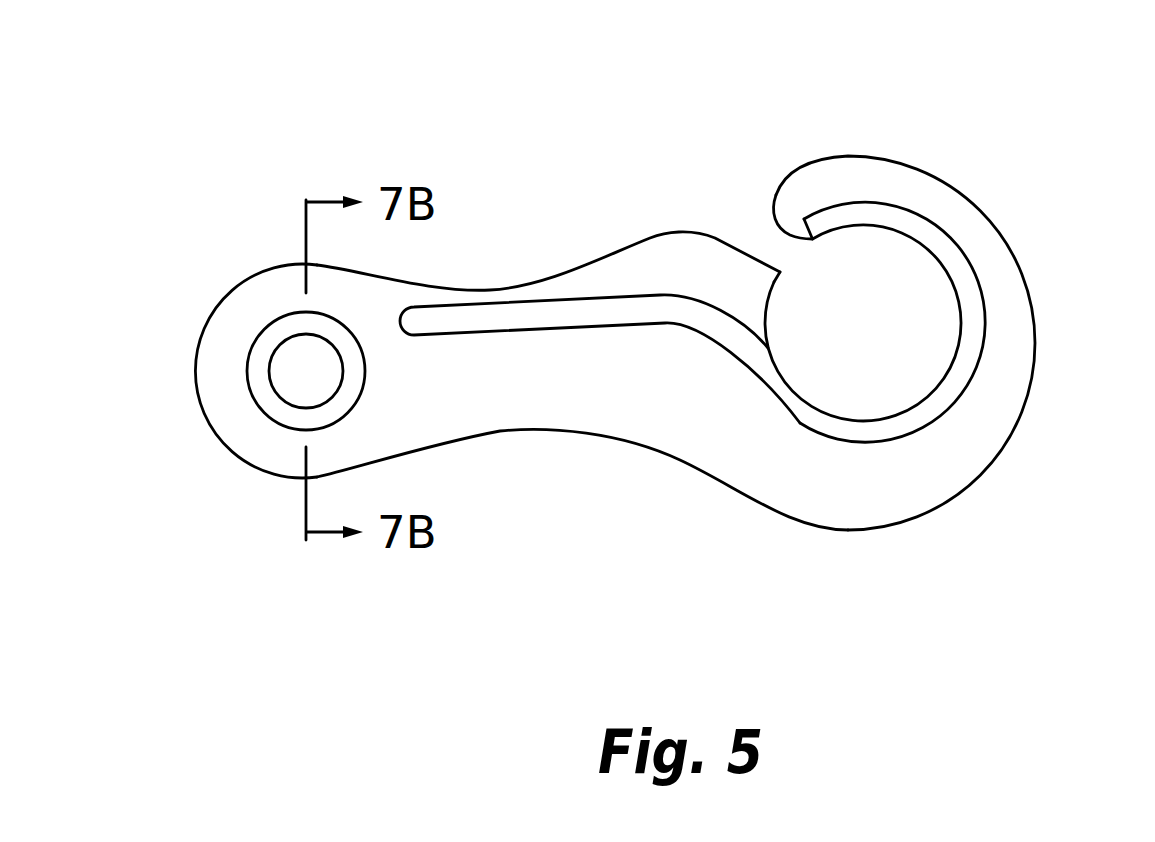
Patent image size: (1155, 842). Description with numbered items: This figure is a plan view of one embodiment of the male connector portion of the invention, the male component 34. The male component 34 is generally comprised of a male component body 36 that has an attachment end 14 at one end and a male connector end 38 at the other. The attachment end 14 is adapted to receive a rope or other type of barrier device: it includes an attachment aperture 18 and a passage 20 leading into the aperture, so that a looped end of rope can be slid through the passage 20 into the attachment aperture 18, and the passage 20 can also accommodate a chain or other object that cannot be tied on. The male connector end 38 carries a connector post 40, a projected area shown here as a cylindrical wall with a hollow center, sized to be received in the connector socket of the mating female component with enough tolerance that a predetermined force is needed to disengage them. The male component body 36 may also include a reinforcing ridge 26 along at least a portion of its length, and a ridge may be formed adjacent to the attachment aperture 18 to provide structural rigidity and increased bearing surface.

The attachment end 14 is at (885, 128).
The attachment aperture 18 is at (920, 322).
The passage 20 is at (765, 233).
The reinforcing ridge 26 is at (592, 313).
The male component 34 is at (503, 193).
The male component body 36 is at (600, 393).
The male connector end 38 is at (272, 243).
The connector post 40 is at (263, 413).